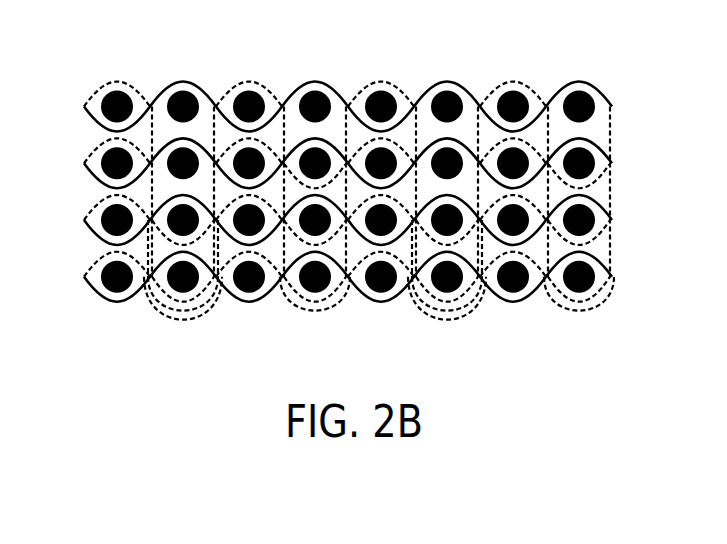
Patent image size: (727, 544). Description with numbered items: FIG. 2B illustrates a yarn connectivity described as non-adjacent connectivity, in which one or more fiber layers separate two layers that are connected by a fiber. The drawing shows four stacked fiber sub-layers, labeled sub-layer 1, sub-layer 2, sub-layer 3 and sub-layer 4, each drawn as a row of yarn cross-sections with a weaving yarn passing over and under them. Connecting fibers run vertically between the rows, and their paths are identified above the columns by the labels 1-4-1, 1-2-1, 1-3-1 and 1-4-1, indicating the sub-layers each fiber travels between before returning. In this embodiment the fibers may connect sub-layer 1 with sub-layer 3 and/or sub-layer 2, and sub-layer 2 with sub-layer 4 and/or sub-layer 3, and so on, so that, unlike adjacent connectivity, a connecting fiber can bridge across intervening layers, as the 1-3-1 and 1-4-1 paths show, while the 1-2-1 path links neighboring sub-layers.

The sub-layer 1 is at (327, 107).
The sub-layer 2 is at (327, 163).
The sub-layer 3 is at (327, 220).
The sub-layer 4 is at (327, 277).
The binder warp yarn path from layer 1 to layer 4 and back 1-4-1 is at (379, 182).
The binder warp yarn path from layer 1 to layer 2 and back 1-2-1 is at (315, 178).
The binder warp yarn path from layer 1 to layer 3 and back 1-3-1 is at (447, 182).